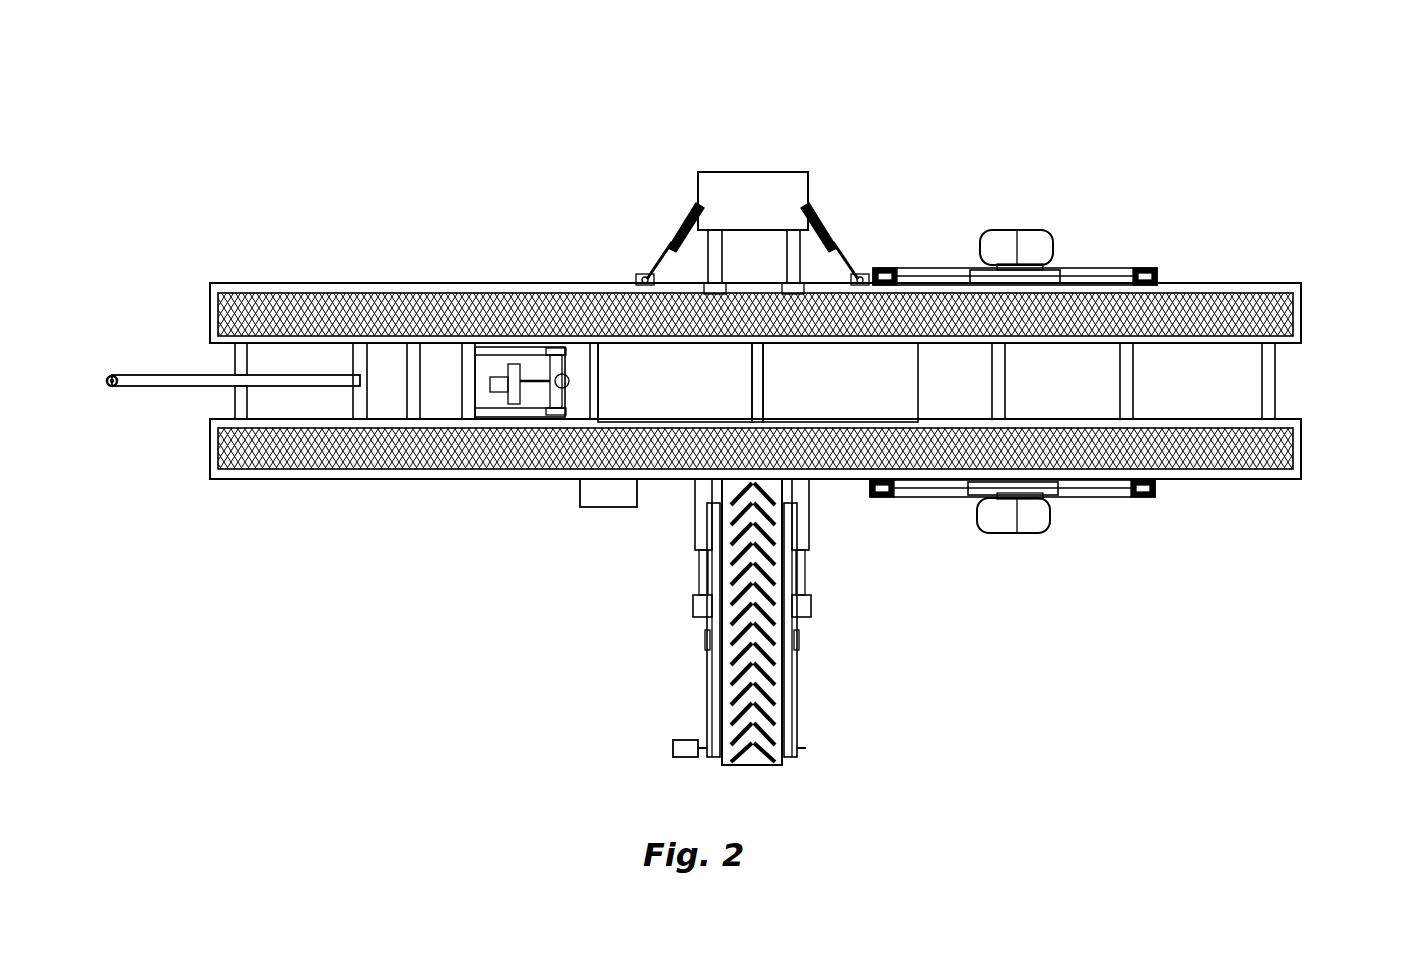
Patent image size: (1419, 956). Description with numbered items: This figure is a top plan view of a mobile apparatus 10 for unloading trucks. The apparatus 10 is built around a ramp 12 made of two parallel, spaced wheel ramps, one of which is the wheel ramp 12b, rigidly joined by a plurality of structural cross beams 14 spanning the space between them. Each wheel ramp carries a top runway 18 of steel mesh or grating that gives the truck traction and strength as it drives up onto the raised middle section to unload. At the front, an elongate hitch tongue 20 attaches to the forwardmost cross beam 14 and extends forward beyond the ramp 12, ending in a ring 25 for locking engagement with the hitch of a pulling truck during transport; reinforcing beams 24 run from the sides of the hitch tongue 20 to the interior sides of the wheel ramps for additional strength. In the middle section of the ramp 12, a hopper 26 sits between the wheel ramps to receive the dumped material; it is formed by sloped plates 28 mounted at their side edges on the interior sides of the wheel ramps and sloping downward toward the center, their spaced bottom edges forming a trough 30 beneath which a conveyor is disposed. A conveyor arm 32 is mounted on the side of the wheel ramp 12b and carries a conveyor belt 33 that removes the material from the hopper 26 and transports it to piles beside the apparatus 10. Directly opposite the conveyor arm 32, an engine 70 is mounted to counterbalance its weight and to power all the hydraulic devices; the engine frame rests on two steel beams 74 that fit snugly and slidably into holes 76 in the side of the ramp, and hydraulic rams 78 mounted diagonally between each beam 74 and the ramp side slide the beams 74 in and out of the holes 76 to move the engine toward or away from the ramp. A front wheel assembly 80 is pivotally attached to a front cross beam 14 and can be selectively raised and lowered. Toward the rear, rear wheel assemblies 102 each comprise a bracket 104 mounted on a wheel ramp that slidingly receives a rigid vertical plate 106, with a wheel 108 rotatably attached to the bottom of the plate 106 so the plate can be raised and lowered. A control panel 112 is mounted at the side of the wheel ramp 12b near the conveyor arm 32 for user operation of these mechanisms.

The mobile apparatus 10 is at (893, 157).
The ramp 12 is at (482, 282).
The wheel ramp 12b is at (387, 478).
The structural cross beams 14 is at (1265, 405).
The top runway 18 is at (1282, 312).
The hitch tongue 20 is at (162, 387).
The reinforcing beams 24 is at (235, 360).
The ring 25 is at (109, 376).
The hopper 26 is at (908, 368).
The sloped plates 28 is at (758, 382).
The trough 30 is at (765, 480).
The conveyor arm 32 is at (707, 672).
The conveyor belt 33 is at (797, 690).
The engine 70 is at (752, 187).
The steel beams 74 is at (793, 260).
The holes 76 is at (705, 283).
The hydraulic rams 78 is at (673, 227).
The front wheel assembly 80 is at (500, 395).
The rear wheel assemblies 102 is at (1052, 213).
The bracket 104 is at (1060, 275).
The vertical plate 106 is at (990, 250).
The wheel 108 is at (1013, 232).
The control panel 112 is at (605, 498).